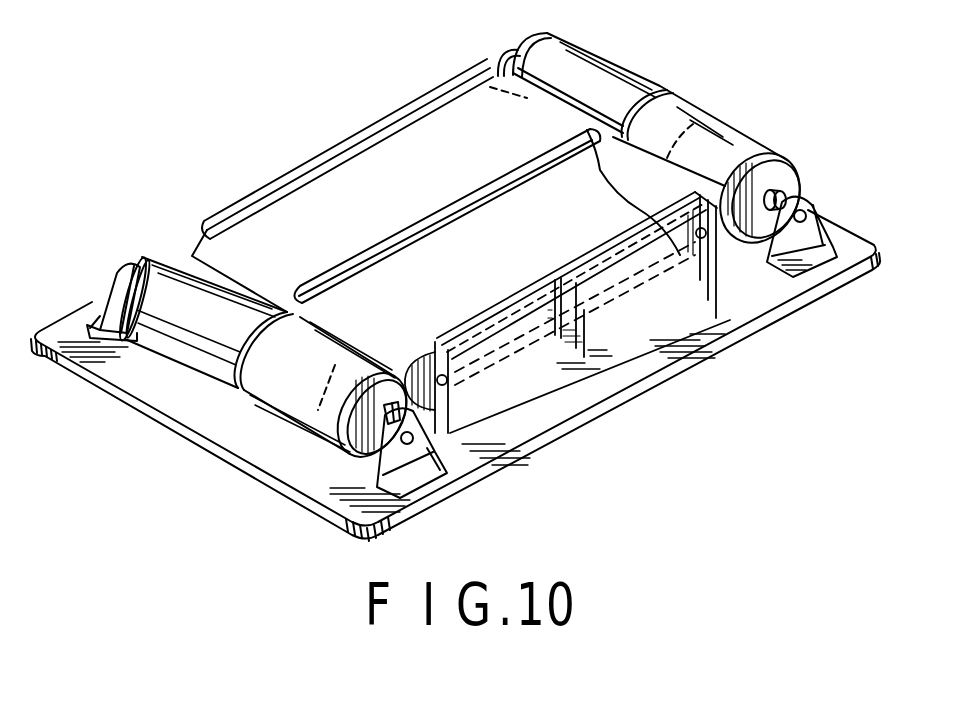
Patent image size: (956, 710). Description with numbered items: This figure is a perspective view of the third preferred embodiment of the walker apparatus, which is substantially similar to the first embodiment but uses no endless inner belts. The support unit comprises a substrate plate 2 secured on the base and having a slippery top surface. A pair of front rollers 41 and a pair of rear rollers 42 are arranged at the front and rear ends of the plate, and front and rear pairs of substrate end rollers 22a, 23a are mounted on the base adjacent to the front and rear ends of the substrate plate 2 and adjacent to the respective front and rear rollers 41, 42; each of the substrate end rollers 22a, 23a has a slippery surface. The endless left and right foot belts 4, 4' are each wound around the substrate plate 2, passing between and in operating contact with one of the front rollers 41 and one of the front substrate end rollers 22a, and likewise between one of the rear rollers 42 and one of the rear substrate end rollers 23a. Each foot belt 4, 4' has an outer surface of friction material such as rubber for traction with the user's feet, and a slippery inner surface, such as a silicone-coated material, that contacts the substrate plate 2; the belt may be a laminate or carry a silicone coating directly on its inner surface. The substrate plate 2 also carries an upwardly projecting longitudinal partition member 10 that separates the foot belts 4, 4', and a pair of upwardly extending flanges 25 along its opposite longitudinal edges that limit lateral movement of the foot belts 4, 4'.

The substrate plate 2 is at (597, 305).
The left foot belt 4 is at (214, 255).
The right foot belt 4' is at (763, 185).
The longitudinal partition member 10 is at (443, 213).
The front substrate end rollers 22a is at (193, 255).
The rear substrate end rollers 23a is at (474, 63).
The upwardly extending flanges 25 is at (248, 204).
The front rollers 41 is at (173, 350).
The rear rollers 42 is at (573, 78).